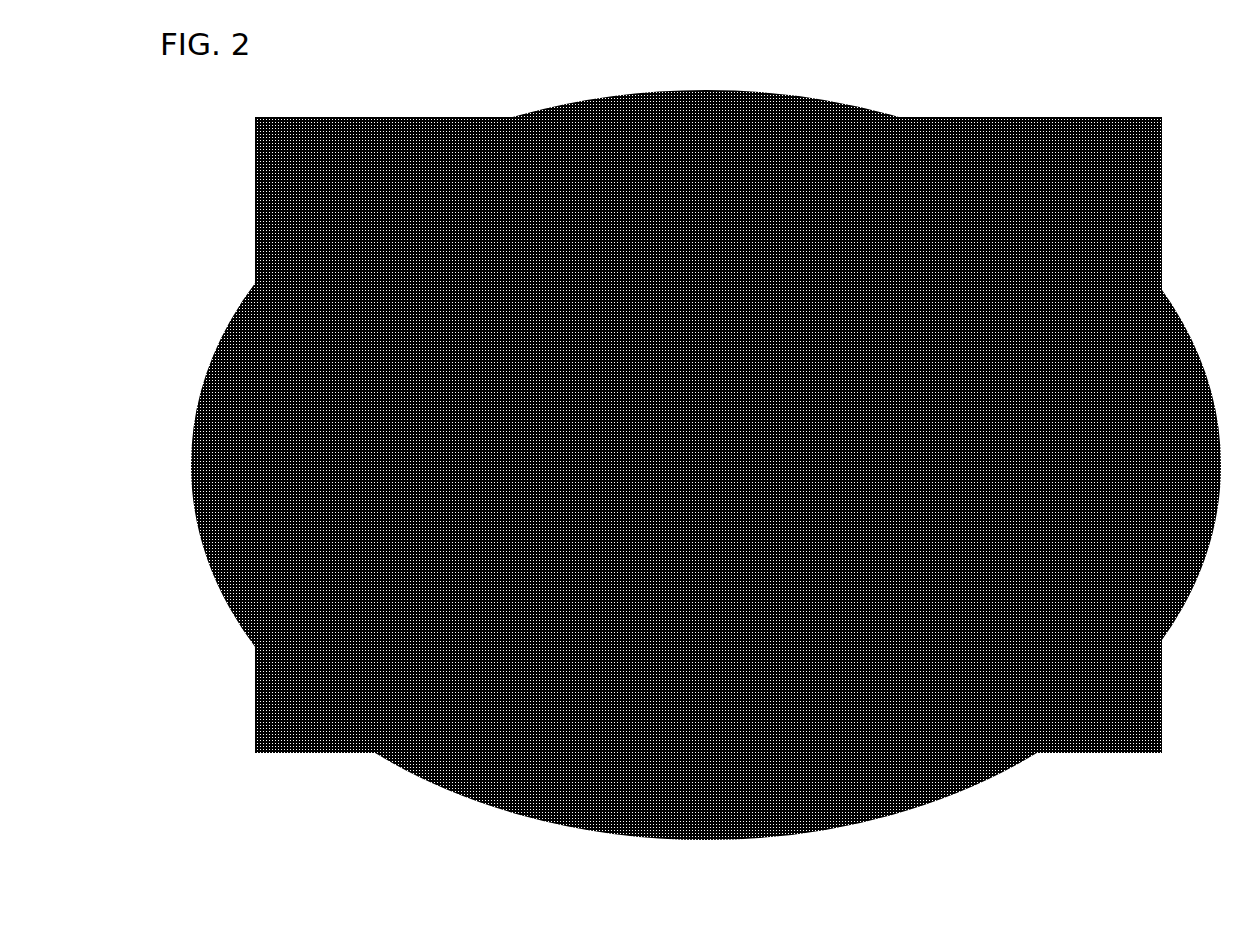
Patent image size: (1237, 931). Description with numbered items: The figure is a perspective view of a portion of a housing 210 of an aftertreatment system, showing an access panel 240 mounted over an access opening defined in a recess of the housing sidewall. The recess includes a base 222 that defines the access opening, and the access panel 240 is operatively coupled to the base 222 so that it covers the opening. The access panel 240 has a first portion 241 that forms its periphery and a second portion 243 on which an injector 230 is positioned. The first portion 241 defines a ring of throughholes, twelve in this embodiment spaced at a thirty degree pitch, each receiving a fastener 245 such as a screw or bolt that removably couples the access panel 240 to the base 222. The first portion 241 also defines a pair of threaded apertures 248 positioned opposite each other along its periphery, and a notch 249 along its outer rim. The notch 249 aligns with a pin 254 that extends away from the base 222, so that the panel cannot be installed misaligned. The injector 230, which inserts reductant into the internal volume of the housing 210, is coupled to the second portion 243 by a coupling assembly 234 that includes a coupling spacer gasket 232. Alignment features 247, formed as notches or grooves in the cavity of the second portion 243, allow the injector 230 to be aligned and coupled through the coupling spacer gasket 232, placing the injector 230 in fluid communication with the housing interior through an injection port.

The housing 210 is at (929, 84).
The base 222 is at (290, 213).
The injector 230 is at (707, 285).
The coupling spacer gasket 232 is at (645, 545).
The coupling assembly 234 is at (808, 572).
The access panel 240 is at (348, 440).
The first portion 241 is at (385, 572).
The second portion 243 is at (535, 555).
The fastener 245 is at (378, 487).
The alignment features 247 is at (590, 590).
The threaded apertures 248 is at (446, 334).
The notch 249 is at (1030, 485).
The pin 254 is at (1050, 478).